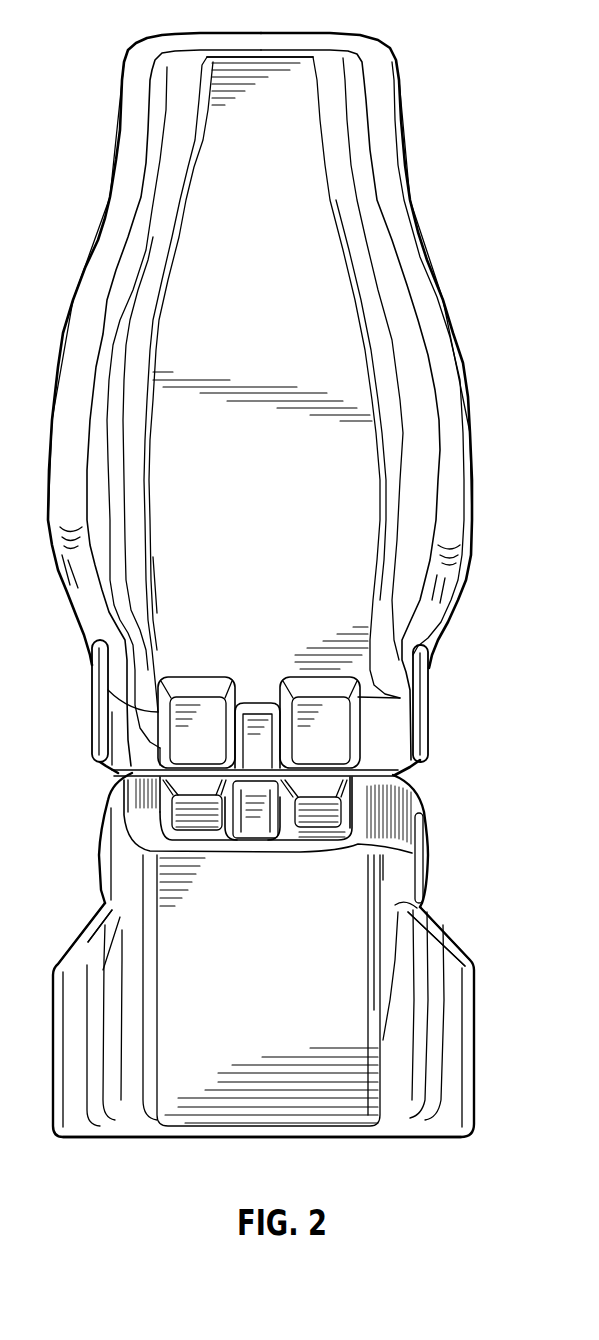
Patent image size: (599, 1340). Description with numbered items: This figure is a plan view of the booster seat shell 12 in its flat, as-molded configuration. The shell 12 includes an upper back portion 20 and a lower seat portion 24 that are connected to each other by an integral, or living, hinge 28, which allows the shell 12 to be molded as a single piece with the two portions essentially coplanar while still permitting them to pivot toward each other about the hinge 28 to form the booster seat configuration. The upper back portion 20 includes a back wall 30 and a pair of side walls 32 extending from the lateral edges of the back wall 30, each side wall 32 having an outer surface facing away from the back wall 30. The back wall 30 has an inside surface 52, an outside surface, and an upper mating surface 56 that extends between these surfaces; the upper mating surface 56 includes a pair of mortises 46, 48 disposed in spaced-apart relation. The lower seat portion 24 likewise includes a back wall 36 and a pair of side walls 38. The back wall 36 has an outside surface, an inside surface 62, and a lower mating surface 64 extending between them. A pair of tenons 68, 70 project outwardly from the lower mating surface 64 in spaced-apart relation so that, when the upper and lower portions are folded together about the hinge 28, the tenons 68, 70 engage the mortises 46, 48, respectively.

The shell 12 is at (269, 606).
The upper back portion 20 is at (269, 404).
The lower seat portion 24 is at (266, 973).
The integral hinge 28 is at (398, 776).
The back wall 30 is at (185, 218).
The side walls 32 is at (97, 285).
The back wall 36 is at (178, 1078).
The side walls 38 is at (80, 965).
The mortise 46 is at (200, 717).
The mortise 48 is at (317, 717).
The inside surface 52 is at (260, 467).
The upper mating surface 56 is at (258, 722).
The inside surface 62 is at (283, 967).
The lower mating surface 64 is at (140, 807).
The tenon 68 is at (195, 812).
The tenon 70 is at (318, 820).